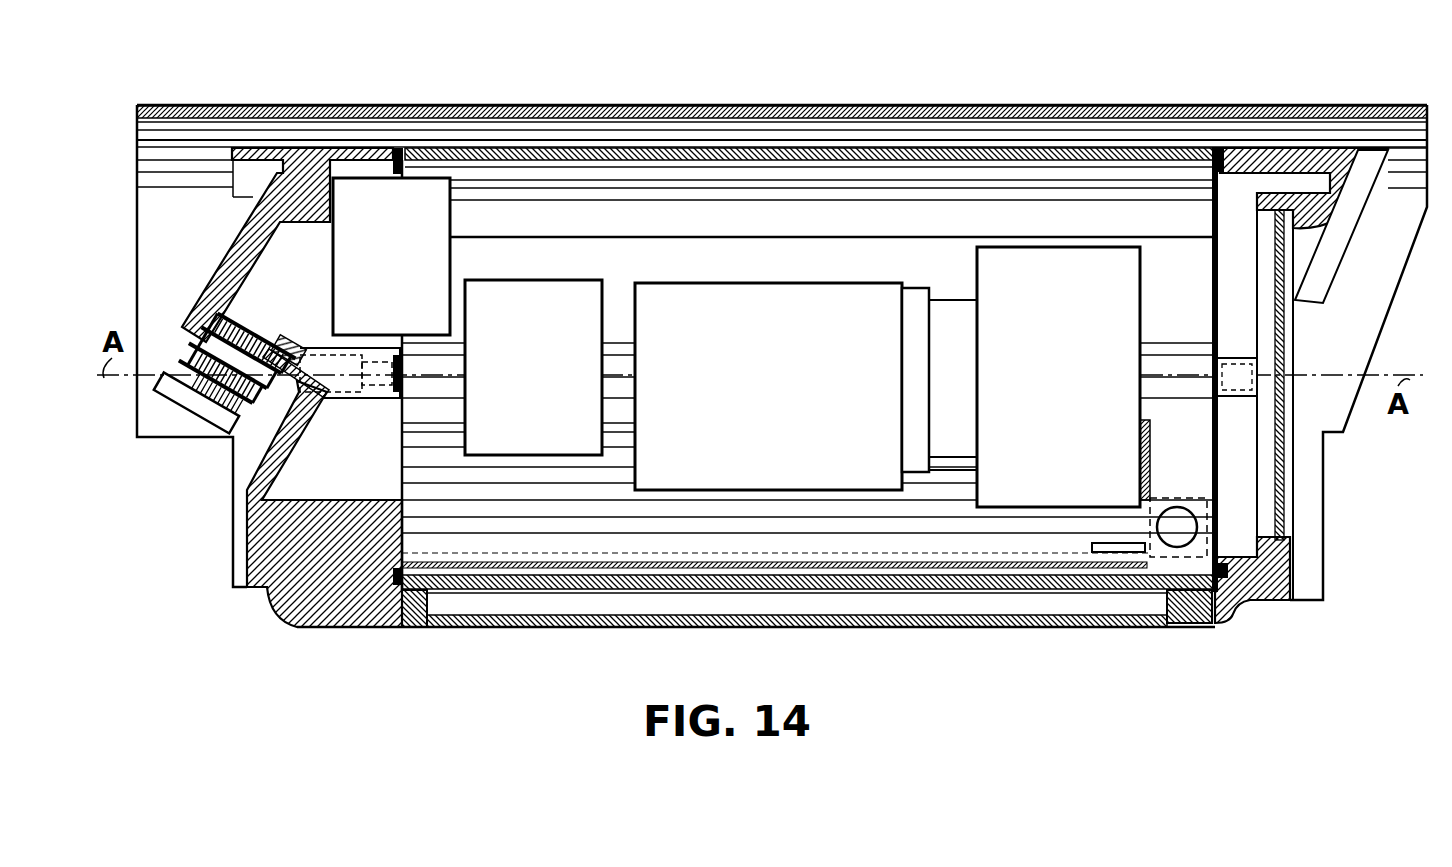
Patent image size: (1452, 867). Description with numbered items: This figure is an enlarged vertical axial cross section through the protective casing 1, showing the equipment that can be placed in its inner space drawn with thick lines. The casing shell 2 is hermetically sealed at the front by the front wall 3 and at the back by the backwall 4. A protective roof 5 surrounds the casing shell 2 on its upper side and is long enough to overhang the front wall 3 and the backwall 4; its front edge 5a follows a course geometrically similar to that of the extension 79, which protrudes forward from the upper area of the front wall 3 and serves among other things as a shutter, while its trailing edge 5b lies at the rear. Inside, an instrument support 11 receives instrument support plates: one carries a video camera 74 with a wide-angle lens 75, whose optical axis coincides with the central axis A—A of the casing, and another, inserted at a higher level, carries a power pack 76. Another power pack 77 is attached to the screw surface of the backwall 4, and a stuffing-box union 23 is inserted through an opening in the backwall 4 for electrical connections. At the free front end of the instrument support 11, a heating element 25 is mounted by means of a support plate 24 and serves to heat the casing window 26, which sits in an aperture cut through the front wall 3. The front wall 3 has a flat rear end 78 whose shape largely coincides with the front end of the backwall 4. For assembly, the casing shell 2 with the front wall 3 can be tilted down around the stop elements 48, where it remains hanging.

The protective casing 1 is at (969, 74).
The casing shell 2 is at (777, 150).
The front wall 3 is at (1262, 148).
The backwall 4 is at (311, 150).
The protective roof 5 is at (903, 118).
The front edge of the protective roof 5a is at (1407, 267).
The trailing edge of the protective roof 5b is at (130, 160).
The instrument support 11 is at (758, 528).
The stuffing-box union 23 is at (200, 364).
The support plate 24 is at (1102, 543).
The heating element 25 is at (1172, 520).
The casing window 26 is at (1288, 470).
The stop elements 48 is at (1193, 615).
The video camera 74 is at (750, 345).
The wide-angle lens 75 is at (1043, 323).
The power pack 76 is at (514, 345).
The power pack 77 is at (435, 204).
The flat rear end of the front wall 78 is at (1210, 146).
The extension of the front wall 79 is at (1372, 150).